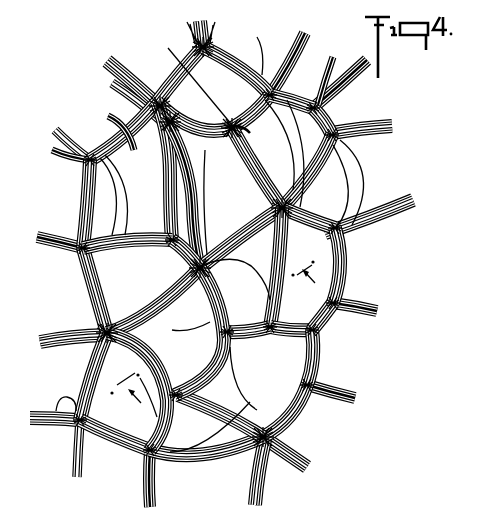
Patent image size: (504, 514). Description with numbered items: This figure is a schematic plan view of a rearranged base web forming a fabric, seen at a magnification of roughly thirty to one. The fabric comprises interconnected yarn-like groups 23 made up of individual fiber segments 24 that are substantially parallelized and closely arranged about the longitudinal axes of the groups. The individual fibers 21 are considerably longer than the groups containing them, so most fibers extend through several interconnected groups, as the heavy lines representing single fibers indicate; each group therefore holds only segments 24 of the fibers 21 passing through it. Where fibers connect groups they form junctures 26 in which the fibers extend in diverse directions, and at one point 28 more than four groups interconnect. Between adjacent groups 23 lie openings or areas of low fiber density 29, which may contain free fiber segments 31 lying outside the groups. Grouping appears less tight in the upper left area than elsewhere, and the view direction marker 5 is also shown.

The fibers 21 is at (125, 238).
The yarn-like groups 23 is at (170, 294).
The fiber segments 24 is at (213, 90).
The junctures 26 is at (208, 49).
The juncture of more than four groups 28 is at (108, 355).
The openings 29 is at (210, 87).
The free fiber segments 31 is at (363, 198).
The direction marker 5 is at (211, 342).